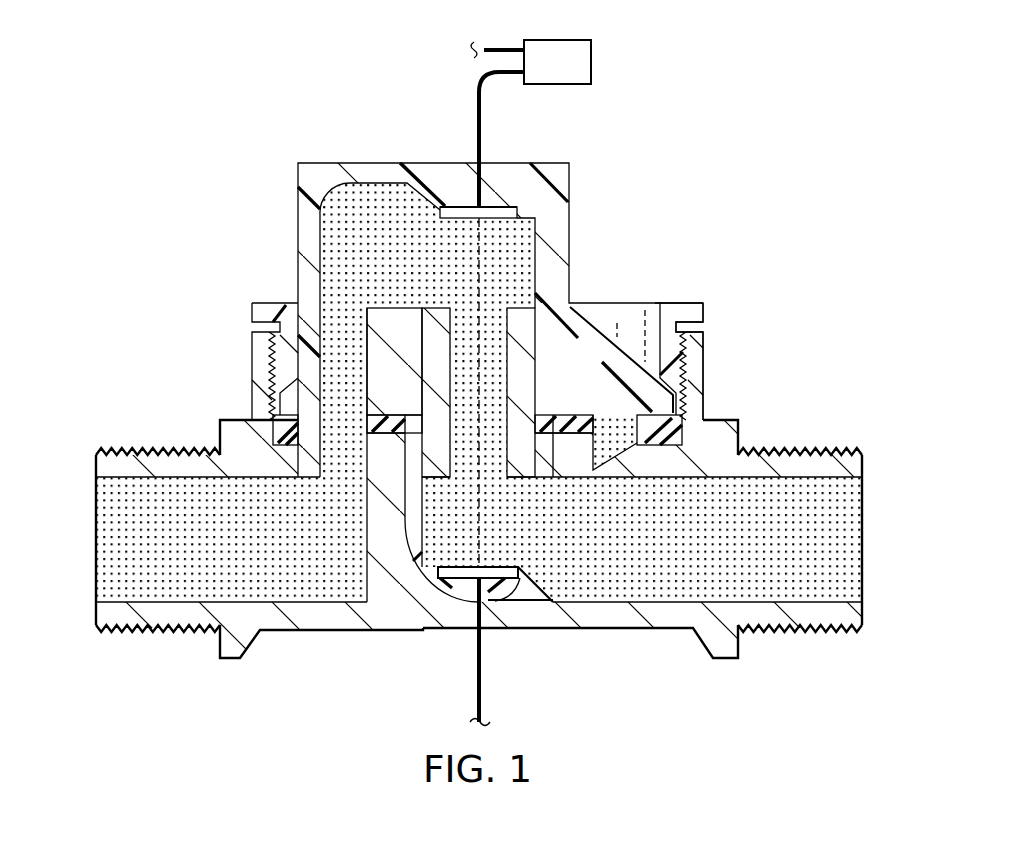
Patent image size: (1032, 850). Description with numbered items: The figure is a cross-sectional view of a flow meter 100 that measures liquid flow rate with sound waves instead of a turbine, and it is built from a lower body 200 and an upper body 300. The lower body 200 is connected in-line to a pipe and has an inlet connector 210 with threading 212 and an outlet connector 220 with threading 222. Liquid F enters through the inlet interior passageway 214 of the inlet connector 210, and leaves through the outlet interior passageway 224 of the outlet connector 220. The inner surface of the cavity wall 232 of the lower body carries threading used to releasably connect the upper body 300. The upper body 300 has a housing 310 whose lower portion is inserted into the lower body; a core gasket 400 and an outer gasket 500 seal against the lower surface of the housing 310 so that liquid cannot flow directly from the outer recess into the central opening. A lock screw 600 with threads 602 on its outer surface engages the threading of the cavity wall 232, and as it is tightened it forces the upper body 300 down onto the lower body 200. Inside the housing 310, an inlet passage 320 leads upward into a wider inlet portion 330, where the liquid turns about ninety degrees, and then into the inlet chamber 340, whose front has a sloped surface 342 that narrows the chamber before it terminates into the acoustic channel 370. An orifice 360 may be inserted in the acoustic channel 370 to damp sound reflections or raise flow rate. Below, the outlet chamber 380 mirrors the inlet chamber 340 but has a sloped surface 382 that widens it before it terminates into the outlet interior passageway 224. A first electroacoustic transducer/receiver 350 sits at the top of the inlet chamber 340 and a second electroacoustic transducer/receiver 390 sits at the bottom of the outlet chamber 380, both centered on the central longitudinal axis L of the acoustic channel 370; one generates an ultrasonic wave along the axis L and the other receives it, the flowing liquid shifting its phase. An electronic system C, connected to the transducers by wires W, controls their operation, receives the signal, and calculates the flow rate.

The flow meter 100 is at (773, 92).
The lower body 200 is at (474, 439).
The inlet connector 210 is at (252, 543).
The threading 212 is at (117, 449).
The inlet interior passageway 214 is at (118, 531).
The outlet connector 220 is at (645, 542).
The threading 222 is at (838, 449).
The outlet interior passageway 224 is at (842, 546).
The cavity wall 232 is at (690, 380).
The upper body 300 is at (482, 393).
The housing 310 is at (307, 217).
The inlet passage 320 is at (322, 370).
The inlet portion 330 is at (378, 185).
The inlet chamber 340 is at (527, 252).
The sloped surface 342 is at (432, 205).
The first electroacoustic transducer/receiver 350 is at (510, 203).
The orifice 360 is at (527, 297).
The acoustic channel 370 is at (497, 420).
The outlet chamber 380 is at (430, 588).
The sloped surface 382 is at (542, 587).
The second electroacoustic transducer/receiver 390 is at (462, 593).
The core gasket 400 is at (380, 418).
The outer gasket 500 is at (690, 430).
The lock screw 600 is at (697, 303).
The threads 602 is at (262, 303).
The wires W is at (518, 42).
The electronic system C is at (557, 62).
The liquid F is at (95, 567).
The central longitudinal axis L is at (484, 390).